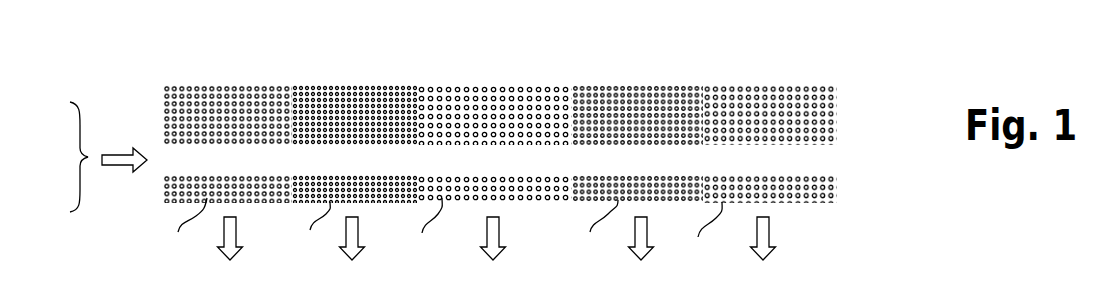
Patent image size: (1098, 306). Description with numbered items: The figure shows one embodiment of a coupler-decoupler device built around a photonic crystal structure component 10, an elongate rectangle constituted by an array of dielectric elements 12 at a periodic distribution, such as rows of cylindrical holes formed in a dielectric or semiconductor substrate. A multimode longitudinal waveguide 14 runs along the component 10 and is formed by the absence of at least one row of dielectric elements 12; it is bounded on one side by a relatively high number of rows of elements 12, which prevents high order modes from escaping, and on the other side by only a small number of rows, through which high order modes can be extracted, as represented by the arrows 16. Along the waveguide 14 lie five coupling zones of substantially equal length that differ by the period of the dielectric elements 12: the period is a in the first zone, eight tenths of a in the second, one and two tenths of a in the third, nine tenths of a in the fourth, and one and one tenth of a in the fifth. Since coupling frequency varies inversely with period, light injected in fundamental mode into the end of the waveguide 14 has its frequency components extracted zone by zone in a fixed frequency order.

The photonic crystal structure component 10 is at (858, 101).
The dielectric elements 12 is at (287, 89).
The multimode longitudinal waveguide 14 is at (185, 160).
The arrows 16 is at (236, 235).